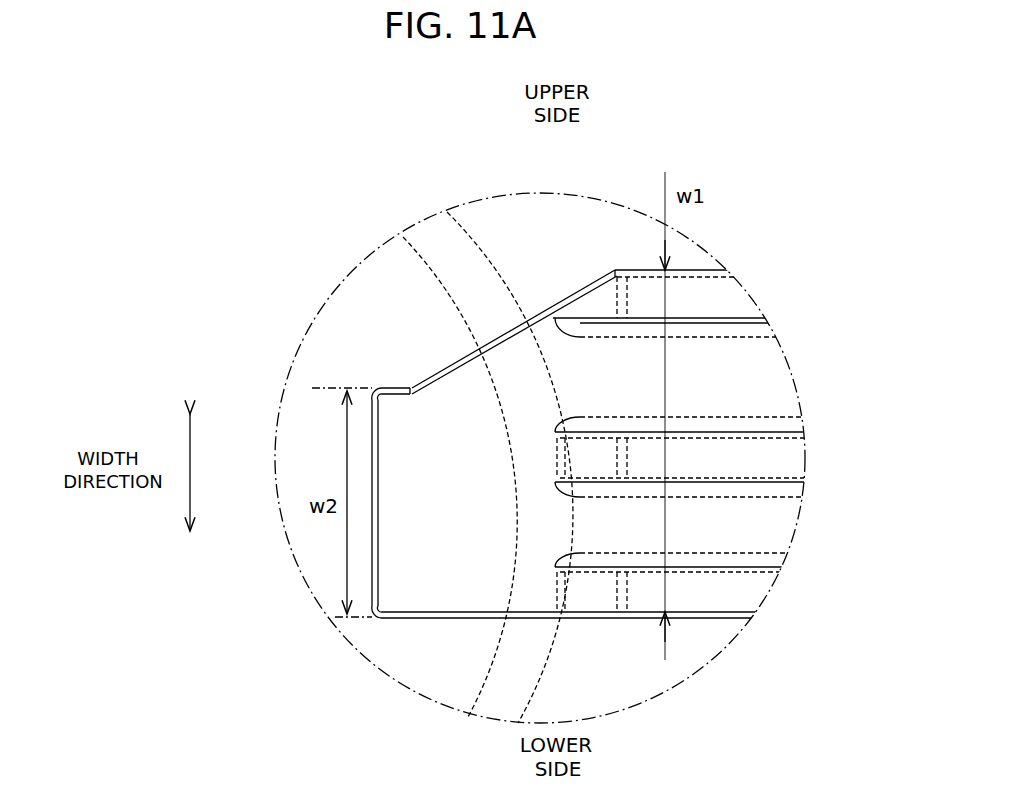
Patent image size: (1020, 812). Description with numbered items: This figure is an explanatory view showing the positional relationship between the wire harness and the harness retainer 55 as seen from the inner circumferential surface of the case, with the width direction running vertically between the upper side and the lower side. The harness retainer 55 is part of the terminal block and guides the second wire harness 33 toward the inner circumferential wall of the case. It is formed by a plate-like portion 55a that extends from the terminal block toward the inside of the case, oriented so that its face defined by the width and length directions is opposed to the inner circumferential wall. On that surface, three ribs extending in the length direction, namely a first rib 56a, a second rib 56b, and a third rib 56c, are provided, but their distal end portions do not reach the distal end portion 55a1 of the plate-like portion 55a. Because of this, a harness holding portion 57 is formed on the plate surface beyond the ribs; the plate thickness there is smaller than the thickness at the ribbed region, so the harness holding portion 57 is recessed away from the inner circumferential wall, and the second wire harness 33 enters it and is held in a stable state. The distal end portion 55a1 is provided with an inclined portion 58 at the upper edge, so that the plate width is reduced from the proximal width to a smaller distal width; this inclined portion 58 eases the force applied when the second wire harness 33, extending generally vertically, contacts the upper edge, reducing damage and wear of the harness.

The second wire harness 33 is at (465, 238).
The harness retainer 55 is at (521, 503).
The plate-like portion 55a is at (590, 618).
The distal end portion 55a1 is at (385, 387).
The first rib 56a is at (740, 325).
The second rib 56b is at (765, 487).
The third rib 56c is at (703, 617).
The harness holding portion 57 is at (433, 587).
The inclined portion 58 is at (550, 317).